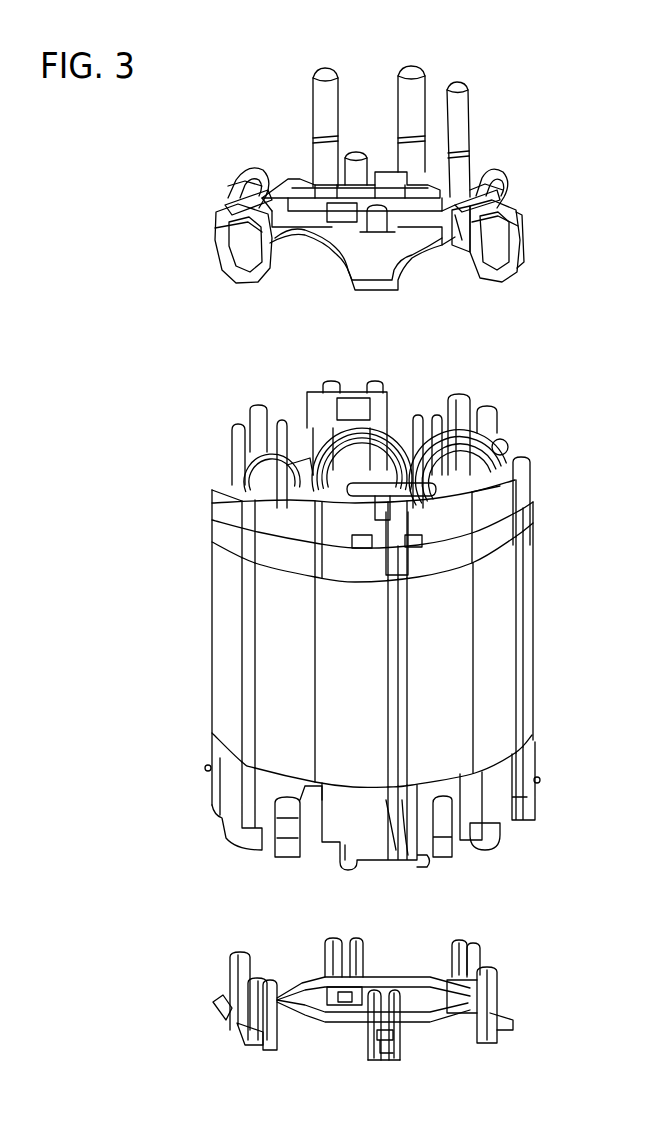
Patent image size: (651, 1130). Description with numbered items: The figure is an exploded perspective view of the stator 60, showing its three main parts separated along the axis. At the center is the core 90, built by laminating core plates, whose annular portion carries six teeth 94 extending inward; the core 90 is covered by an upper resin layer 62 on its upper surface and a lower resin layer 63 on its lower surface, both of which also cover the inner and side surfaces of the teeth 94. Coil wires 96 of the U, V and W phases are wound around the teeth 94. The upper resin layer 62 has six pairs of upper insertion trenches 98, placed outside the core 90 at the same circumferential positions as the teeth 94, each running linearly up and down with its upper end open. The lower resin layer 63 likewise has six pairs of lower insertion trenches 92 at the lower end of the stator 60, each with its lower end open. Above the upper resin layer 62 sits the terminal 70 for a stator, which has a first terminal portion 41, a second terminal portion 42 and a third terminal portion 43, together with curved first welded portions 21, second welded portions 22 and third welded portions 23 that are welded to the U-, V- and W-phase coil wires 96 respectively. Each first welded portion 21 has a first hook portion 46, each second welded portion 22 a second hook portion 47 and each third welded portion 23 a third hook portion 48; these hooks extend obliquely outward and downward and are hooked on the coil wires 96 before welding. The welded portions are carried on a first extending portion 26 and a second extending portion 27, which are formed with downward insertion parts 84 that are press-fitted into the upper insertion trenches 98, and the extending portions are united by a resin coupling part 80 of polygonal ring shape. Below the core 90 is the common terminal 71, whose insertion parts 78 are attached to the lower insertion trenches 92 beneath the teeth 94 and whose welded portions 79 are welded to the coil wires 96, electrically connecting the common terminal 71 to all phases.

The terminal for a stator 70 is at (491, 70).
The first terminal portion 41 is at (325, 70).
The second terminal portion 42 is at (410, 68).
The third terminal portion 43 is at (457, 84).
The first welded portion 21 is at (357, 152).
The first hook portion 46 is at (372, 225).
The first extending portion 26 is at (295, 250).
The insertion part 84 is at (237, 267).
The second welded portion 22 is at (250, 167).
The third welded portion 23 is at (476, 176).
The second hook portion 47 is at (230, 181).
The third hook portion 48 is at (492, 187).
The second extending portion 27 is at (513, 220).
The coupling part 80 is at (452, 233).
The stator 60 is at (545, 403).
The upper resin layer 62 is at (502, 538).
The core 90 is at (535, 672).
The lower resin layer 63 is at (508, 770).
The coil wire 96 is at (393, 450).
The tooth 94 is at (505, 487).
The upper insertion trench 98 is at (352, 548).
The lower insertion trench 92 is at (394, 850).
The common terminal 71 is at (492, 1046).
The insertion part 78 is at (498, 980).
The welded portion 79 is at (513, 1022).